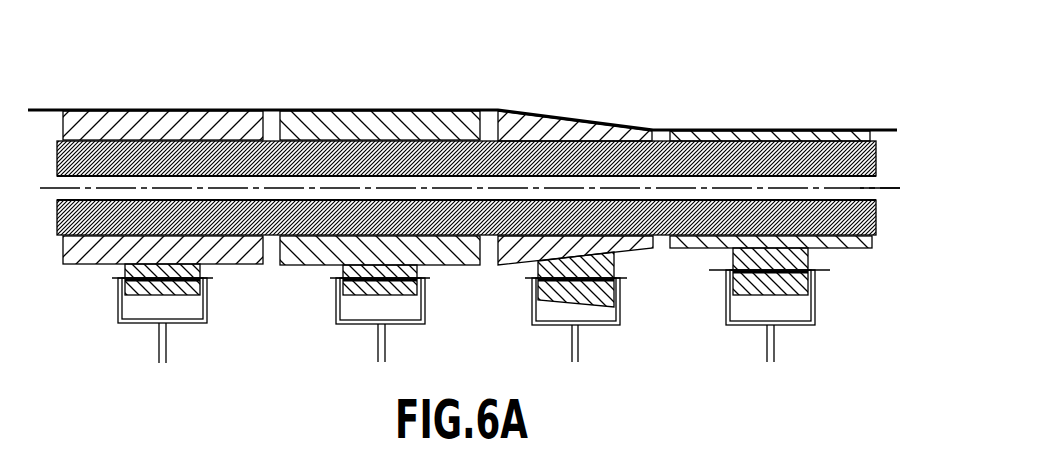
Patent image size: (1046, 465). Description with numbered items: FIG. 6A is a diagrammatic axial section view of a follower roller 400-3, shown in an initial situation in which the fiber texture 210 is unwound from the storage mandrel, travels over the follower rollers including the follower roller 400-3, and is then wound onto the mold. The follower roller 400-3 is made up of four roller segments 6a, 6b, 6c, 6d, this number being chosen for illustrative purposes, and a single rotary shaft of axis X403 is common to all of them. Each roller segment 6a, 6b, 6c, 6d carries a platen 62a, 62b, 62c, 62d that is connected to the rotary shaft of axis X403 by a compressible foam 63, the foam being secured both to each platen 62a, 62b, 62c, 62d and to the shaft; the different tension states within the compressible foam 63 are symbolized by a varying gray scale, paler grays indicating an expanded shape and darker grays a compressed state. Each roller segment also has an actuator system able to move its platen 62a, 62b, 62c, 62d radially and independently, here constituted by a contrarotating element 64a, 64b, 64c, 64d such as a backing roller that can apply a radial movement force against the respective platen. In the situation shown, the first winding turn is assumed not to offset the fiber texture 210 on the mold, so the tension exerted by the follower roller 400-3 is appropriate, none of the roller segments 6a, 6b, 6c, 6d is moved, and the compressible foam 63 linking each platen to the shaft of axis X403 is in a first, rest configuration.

The follower roller 400-3 is at (256, 86).
The fiber texture 210 is at (44, 108).
The compressible foam 63 is at (108, 158).
The platen 62a is at (161, 120).
The platen 62b is at (363, 120).
The platen 62c is at (569, 128).
The platen 62d is at (777, 138).
The roller segment 6a is at (76, 276).
The roller segment 6b is at (295, 274).
The roller segment 6c is at (511, 272).
The roller segment 6d is at (693, 256).
The contrarotating element 64a is at (147, 304).
The contrarotating element 64b is at (367, 304).
The contrarotating element 64c is at (557, 314).
The contrarotating element 64d is at (751, 304).
The axis of the rotary shaft X403 is at (888, 192).